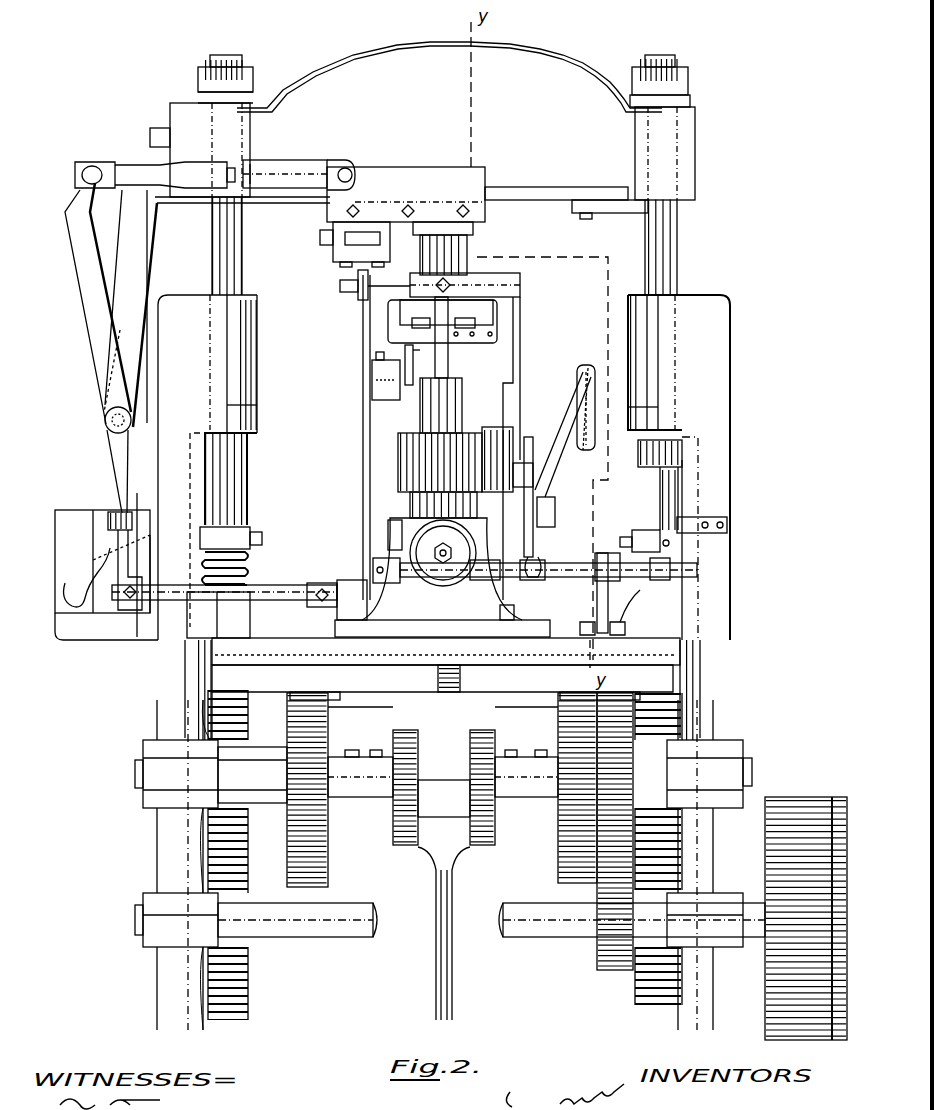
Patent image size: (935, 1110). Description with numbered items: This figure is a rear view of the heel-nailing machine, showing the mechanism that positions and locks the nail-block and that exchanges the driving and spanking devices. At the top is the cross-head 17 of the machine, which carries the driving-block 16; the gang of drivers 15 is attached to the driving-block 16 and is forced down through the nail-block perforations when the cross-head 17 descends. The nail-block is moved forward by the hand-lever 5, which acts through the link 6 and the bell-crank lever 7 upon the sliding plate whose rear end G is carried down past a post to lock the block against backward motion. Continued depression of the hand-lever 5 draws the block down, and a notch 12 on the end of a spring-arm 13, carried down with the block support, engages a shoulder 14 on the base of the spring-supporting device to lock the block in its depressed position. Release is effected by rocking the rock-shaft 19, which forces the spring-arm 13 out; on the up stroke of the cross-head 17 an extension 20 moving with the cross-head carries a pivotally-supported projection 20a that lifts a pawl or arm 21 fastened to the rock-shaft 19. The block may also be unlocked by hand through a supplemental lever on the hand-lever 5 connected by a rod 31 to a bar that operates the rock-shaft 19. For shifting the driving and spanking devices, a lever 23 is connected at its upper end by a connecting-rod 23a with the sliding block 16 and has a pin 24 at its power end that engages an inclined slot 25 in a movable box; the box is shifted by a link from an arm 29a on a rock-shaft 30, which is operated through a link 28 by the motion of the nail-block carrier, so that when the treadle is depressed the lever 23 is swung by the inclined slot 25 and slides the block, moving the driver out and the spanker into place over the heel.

The cross-head 17 is at (449, 84).
The connecting-rod 23a is at (292, 168).
The driving-block 16 is at (468, 229).
The gang of drivers 15 is at (467, 250).
The rear end of the sliding plate G is at (477, 310).
The bell-crank lever 7 is at (513, 362).
The link 28 is at (363, 408).
The spring-arm 13 is at (382, 462).
The shoulder 14 is at (390, 535).
The notch 12 is at (388, 548).
The rock-shaft 19 is at (372, 567).
The rock-shaft 30 is at (312, 616).
The hand-lever 5 is at (575, 392).
The link or rod 31 is at (577, 420).
The link 6 is at (533, 486).
The extension 20 is at (665, 500).
The pivotally-supported projection 20a is at (680, 535).
The pawl or arm 21 is at (683, 548).
The lever 23 is at (95, 354).
The pin 24 is at (112, 530).
The arm 29a is at (128, 555).
The inclined slot 25 is at (68, 594).